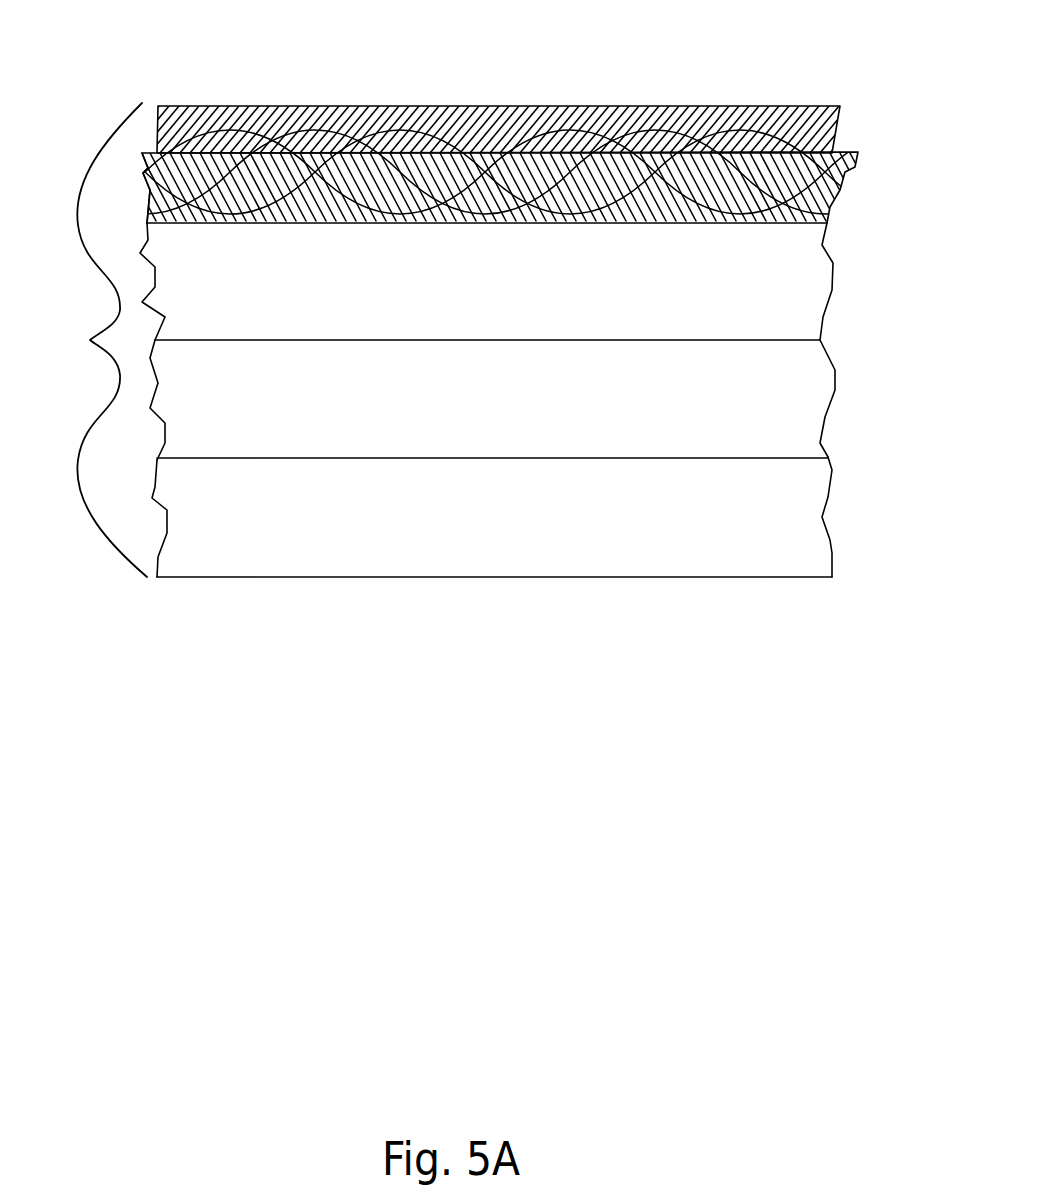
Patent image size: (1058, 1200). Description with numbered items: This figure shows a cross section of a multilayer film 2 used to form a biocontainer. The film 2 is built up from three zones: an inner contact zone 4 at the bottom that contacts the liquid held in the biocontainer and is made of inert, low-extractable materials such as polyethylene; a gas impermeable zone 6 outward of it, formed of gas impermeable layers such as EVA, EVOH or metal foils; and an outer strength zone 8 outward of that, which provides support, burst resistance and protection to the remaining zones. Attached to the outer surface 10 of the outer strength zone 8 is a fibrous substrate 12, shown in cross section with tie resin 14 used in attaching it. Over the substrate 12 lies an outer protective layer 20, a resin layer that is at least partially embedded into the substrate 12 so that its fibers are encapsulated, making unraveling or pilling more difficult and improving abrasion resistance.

The film 2 is at (98, 340).
The inner contact zone 4 is at (807, 521).
The gas impermeable zone 6 is at (807, 400).
The outer strength zone 8 is at (815, 290).
The outer surface 10 is at (827, 224).
The substrate 12 is at (835, 192).
The tie resin 14 is at (150, 207).
The outer protective layer 20 is at (775, 128).